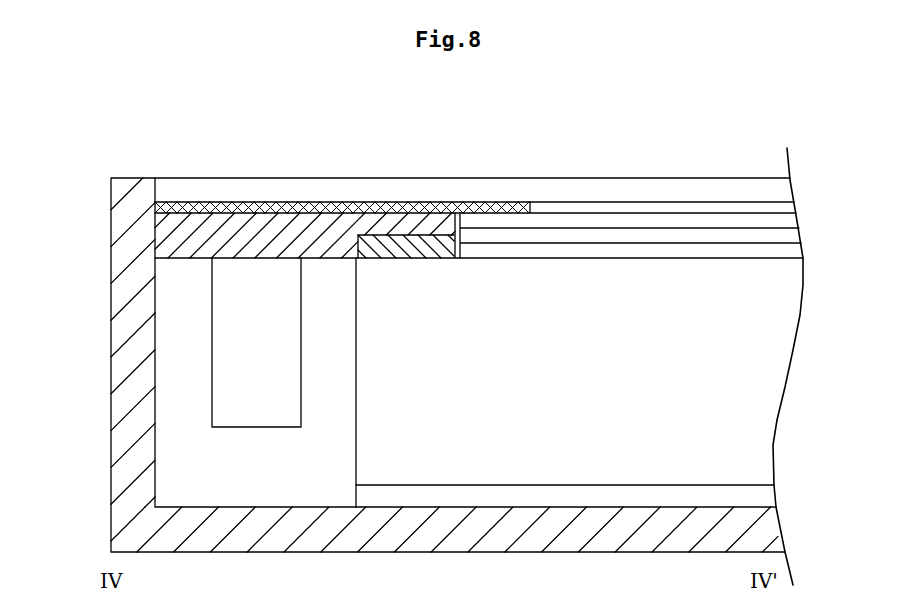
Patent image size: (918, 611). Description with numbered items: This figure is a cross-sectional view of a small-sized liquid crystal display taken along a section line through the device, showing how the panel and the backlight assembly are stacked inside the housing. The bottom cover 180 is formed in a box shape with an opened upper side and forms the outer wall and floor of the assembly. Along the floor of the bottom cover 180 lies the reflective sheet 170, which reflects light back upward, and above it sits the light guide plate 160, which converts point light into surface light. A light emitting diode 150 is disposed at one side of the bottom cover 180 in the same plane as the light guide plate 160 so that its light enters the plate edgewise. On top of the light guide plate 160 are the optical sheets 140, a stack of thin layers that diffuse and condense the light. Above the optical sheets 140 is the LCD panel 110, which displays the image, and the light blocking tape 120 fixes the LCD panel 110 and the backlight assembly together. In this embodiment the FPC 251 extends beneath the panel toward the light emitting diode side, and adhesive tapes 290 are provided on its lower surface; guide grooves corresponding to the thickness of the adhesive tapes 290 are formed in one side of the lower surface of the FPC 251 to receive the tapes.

The LCD panel 110 is at (410, 190).
The light blocking tape 120 is at (505, 207).
The optical sheets 140 is at (811, 215).
The light emitting diodes 150 is at (225, 306).
The light guide plate 160 is at (765, 386).
The reflective sheet 170 is at (762, 496).
The bottom cover 180 is at (128, 398).
The FPC 251 is at (240, 207).
The adhesive tapes 290 is at (353, 247).